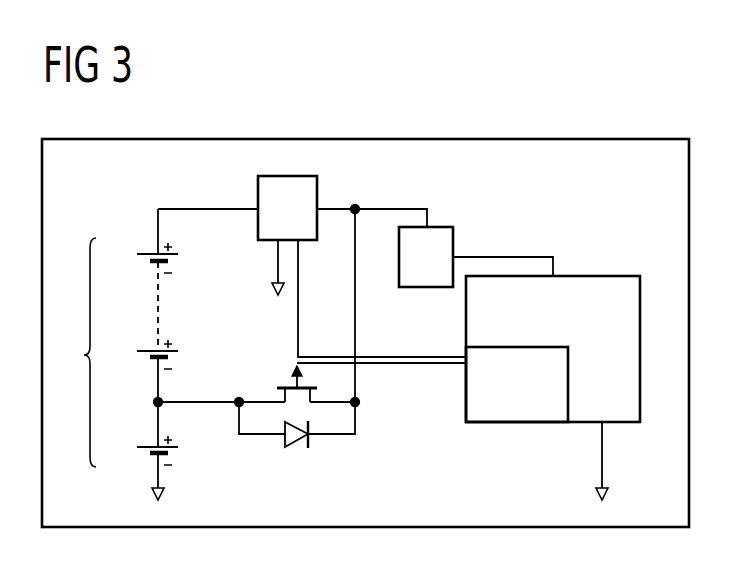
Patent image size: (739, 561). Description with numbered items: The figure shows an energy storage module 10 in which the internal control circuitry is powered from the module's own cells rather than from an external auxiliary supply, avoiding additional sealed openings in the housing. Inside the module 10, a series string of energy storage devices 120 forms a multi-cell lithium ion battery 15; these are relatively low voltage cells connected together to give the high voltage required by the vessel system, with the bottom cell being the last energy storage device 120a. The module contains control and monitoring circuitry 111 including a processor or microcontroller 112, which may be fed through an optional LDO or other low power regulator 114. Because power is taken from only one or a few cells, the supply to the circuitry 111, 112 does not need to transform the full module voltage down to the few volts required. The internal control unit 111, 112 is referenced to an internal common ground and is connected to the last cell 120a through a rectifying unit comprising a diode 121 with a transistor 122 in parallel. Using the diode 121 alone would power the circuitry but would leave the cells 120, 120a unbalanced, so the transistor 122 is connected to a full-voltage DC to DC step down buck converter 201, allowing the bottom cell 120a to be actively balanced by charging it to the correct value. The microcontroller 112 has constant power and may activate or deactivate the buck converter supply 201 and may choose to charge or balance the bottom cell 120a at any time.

The energy storage module 10 is at (474, 112).
The multi-cell lithium ion battery 15 is at (115, 346).
The energy storage device 120 is at (150, 252).
The last energy storage device 120a is at (143, 445).
The buck converter 201 is at (257, 193).
The regulator 114 is at (439, 226).
The control and monitoring circuitry 111 is at (598, 283).
The microcontroller 112 is at (517, 355).
The transistor 122 is at (274, 363).
The diode 121 is at (297, 445).